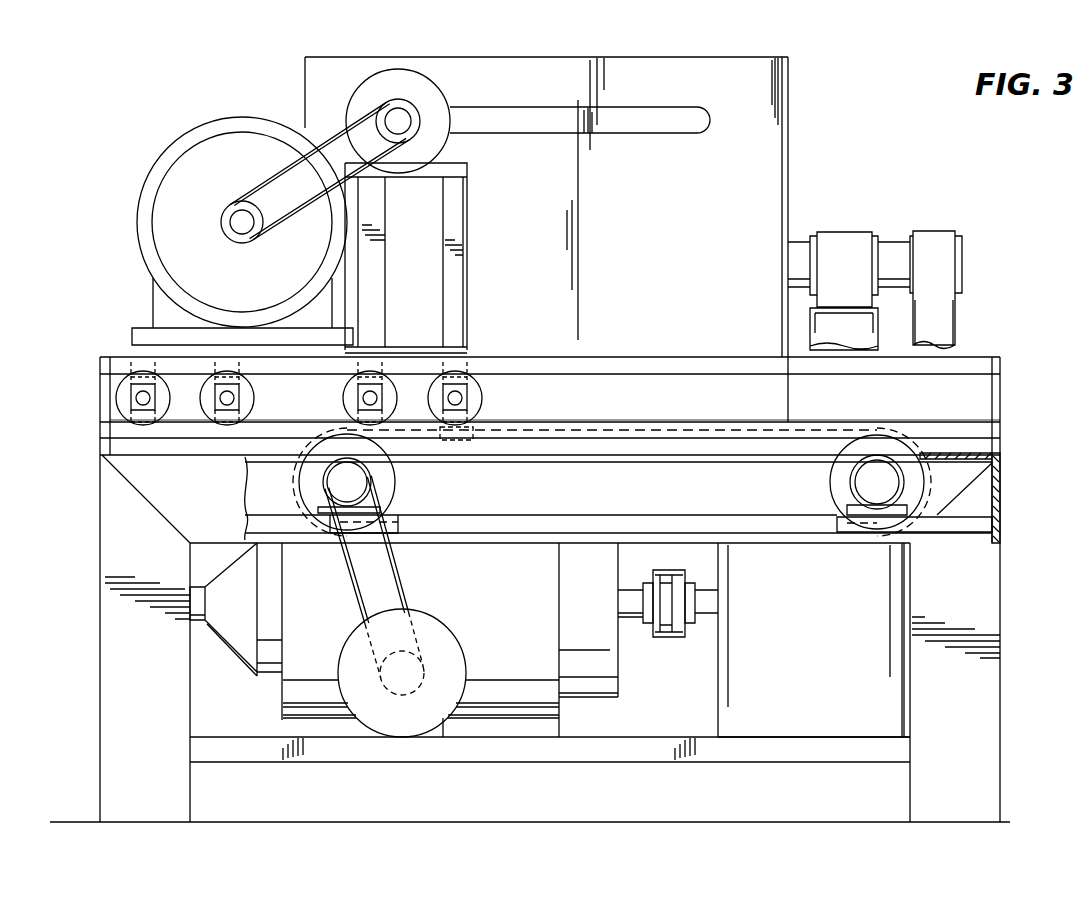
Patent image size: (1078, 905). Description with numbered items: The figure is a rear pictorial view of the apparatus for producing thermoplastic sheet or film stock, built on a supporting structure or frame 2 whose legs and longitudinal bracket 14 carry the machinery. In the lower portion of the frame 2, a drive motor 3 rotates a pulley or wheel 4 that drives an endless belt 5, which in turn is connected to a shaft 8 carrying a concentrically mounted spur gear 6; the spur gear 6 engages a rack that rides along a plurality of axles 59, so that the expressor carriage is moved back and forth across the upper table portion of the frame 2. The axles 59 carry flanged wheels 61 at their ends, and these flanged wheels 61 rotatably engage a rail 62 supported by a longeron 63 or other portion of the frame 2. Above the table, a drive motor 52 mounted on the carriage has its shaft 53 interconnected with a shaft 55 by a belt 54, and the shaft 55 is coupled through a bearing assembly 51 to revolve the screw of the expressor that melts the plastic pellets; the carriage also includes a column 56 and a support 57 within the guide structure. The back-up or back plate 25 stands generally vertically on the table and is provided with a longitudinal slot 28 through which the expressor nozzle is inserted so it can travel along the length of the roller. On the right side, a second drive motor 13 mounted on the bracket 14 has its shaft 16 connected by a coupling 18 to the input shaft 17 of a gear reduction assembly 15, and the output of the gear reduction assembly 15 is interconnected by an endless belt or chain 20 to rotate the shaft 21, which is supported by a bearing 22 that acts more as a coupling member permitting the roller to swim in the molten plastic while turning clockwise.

The frame 2 is at (1002, 595).
The drive motor 3 is at (457, 637).
The pulley 4 is at (440, 678).
The endless belt 5 is at (402, 585).
The spur gear 6 is at (307, 488).
The shaft 8 is at (363, 483).
The second drive motor 13 is at (322, 625).
The longitudinal bracket 14 is at (520, 763).
The gear reduction assembly 15 is at (813, 690).
The shaft 16 is at (198, 623).
The input shaft 17 is at (707, 583).
The coupling 18 is at (672, 640).
The endless belt or chain 20 is at (958, 320).
The shaft 21 is at (895, 237).
The bearing 22 is at (848, 232).
The back plate 25 is at (663, 55).
The slot 28 is at (648, 110).
The bearing assembly 51 is at (442, 93).
The drive motor 52 is at (188, 132).
The shaft 53 is at (222, 232).
The belt 54 is at (273, 173).
The shaft 55 is at (392, 100).
The column 56 is at (413, 345).
The support block 57 is at (463, 363).
The axles 59 is at (138, 400).
The flanged wheels 61 is at (115, 390).
The rail 62 is at (263, 418).
The longeron 63 is at (612, 440).